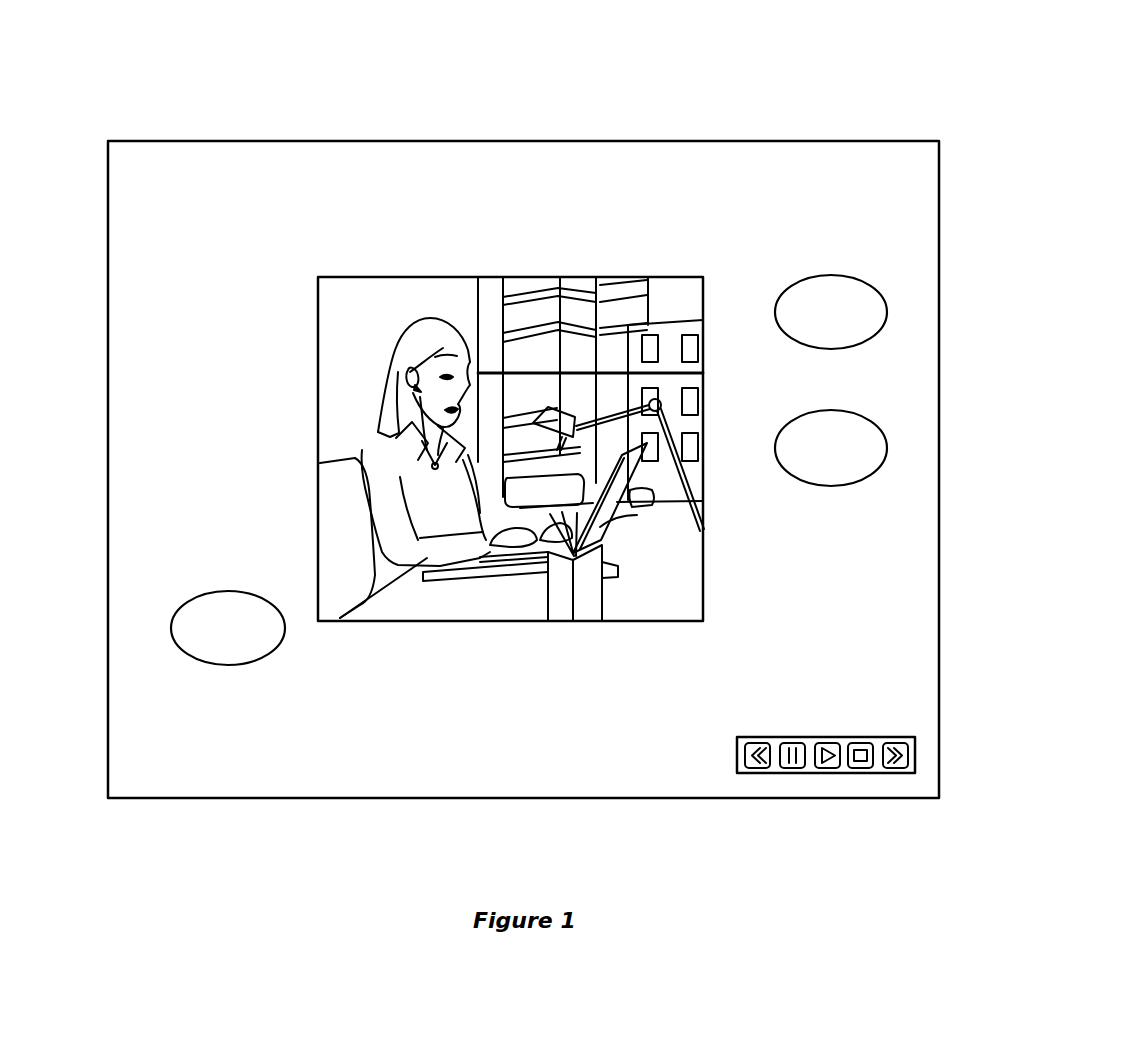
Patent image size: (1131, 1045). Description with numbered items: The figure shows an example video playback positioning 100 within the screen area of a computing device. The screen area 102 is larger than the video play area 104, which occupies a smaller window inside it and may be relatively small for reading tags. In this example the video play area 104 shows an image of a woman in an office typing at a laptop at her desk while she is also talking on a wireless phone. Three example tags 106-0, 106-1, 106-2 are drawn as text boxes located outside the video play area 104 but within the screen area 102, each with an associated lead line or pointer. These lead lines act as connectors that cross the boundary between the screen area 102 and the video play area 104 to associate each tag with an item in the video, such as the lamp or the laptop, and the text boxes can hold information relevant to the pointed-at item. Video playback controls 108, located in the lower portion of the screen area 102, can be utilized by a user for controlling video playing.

The video playback positioning 100 is at (1034, 81).
The screen area 102 is at (928, 601).
The video play area 104 is at (694, 580).
The tag 106-0 is at (575, 432).
The tag 106-1 is at (633, 481).
The tag 106-2 is at (358, 453).
The video playback controls 108 is at (915, 750).